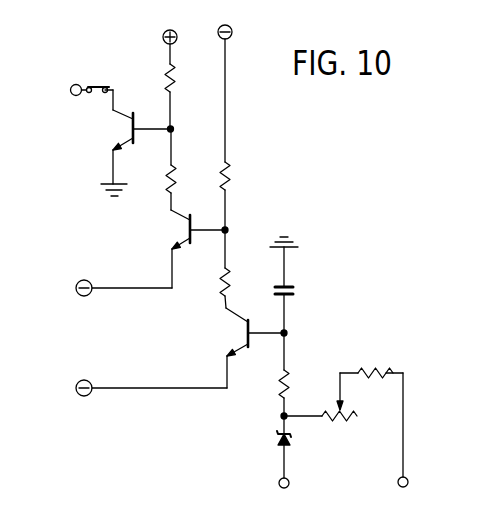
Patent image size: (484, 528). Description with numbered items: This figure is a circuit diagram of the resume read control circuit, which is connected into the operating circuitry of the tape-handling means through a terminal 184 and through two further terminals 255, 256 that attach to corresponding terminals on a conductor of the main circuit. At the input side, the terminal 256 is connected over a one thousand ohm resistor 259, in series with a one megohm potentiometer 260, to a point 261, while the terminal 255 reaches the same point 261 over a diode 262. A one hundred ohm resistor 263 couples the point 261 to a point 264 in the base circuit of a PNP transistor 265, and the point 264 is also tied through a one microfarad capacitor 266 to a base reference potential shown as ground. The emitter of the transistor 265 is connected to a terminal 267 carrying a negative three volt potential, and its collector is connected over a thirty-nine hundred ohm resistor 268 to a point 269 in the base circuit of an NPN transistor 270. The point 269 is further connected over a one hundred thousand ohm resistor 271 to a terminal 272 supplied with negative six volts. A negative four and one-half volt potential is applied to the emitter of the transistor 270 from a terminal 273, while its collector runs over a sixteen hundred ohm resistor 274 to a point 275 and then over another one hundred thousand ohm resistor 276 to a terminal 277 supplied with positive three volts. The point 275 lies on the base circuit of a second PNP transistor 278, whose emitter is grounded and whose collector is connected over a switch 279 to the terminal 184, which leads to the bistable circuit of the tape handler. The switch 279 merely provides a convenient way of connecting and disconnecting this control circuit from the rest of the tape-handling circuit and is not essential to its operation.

The terminal 184 is at (72, 88).
The switch 279 is at (101, 86).
The transistor 278 is at (130, 99).
The terminal 277 is at (164, 33).
The resistor 276 is at (172, 68).
The point 275 is at (172, 127).
The resistor 274 is at (173, 171).
The resistor 271 is at (228, 167).
The terminal 272 is at (228, 26).
The transistor 270 is at (189, 216).
The point 269 is at (228, 228).
The resistor 268 is at (222, 284).
The terminal 273 is at (82, 281).
The terminal 267 is at (83, 381).
The transistor 265 is at (246, 333).
The capacitor 266 is at (286, 257).
The point 264 is at (287, 333).
The resistor 263 is at (288, 373).
The point 261 is at (282, 416).
The diode 262 is at (281, 440).
The potentiometer 260 is at (334, 421).
The resistor 259 is at (369, 369).
The terminal 255 is at (287, 488).
The terminal 256 is at (400, 486).